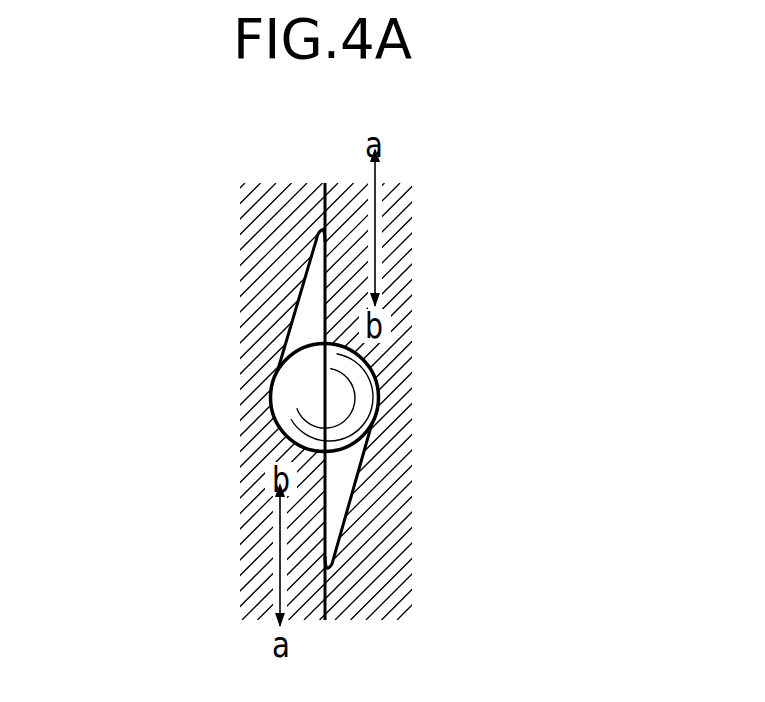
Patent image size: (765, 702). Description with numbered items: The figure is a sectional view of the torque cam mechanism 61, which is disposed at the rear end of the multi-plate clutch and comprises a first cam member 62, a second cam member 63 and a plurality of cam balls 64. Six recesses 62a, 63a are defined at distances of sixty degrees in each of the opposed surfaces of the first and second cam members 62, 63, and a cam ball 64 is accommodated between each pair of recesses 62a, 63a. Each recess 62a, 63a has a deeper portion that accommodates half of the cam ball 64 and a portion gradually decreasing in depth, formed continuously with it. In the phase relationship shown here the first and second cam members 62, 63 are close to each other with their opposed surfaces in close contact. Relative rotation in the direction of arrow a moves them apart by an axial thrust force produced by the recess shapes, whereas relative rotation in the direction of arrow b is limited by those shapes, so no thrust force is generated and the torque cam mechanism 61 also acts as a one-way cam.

The torque cam mechanism 61 is at (495, 365).
The first cam member 62 is at (420, 325).
The recess 62a is at (355, 487).
The second cam member 63 is at (222, 321).
The recess 63a is at (305, 284).
The cam ball 64 is at (305, 387).